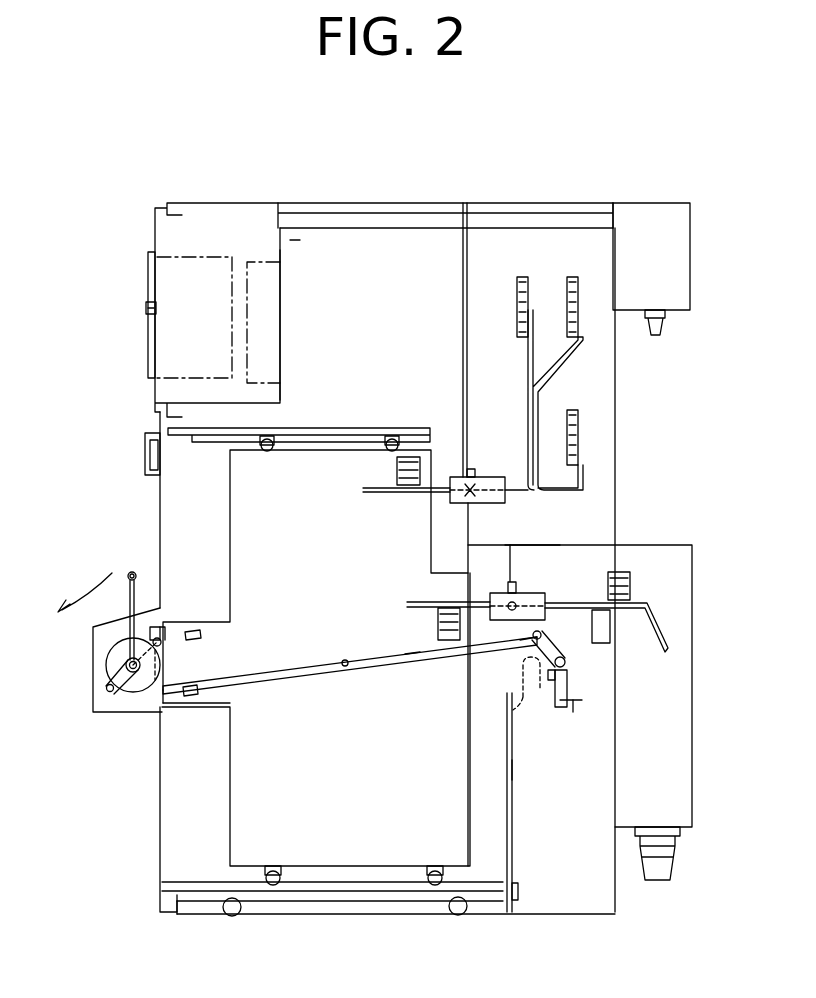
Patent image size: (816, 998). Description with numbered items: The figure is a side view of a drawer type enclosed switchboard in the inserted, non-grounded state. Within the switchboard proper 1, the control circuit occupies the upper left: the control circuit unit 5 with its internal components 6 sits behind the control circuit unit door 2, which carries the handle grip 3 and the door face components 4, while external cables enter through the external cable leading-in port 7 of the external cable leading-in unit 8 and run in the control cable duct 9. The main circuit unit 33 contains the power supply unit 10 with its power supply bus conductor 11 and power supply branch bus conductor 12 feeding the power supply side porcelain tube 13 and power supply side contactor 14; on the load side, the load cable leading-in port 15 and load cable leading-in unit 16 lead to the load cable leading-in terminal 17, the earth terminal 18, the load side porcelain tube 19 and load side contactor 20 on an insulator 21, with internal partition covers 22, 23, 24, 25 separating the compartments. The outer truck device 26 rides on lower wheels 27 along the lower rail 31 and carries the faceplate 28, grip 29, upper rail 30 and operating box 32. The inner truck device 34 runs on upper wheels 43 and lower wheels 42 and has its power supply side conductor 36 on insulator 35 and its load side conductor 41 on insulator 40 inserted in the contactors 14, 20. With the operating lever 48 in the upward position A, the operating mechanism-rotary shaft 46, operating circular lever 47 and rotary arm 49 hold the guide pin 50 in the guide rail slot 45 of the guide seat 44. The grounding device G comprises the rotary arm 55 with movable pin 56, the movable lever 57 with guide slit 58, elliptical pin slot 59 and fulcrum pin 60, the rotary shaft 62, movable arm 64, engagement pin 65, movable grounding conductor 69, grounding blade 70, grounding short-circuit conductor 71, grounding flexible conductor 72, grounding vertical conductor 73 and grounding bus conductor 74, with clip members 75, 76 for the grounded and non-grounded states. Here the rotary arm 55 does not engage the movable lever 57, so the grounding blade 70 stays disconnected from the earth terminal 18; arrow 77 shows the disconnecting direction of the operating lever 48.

The switchboard proper 1 is at (263, 203).
The control circuit unit door 2 is at (155, 230).
The handle grip for the control circuit unit door 3 is at (146, 310).
The components mounted on a door face 4 is at (148, 270).
The control circuit unit 5 is at (207, 250).
The internal components of the control circuit 6 is at (257, 260).
The external cable leading-in port of the control circuit 7 is at (655, 336).
The external cable leading-in unit of the control circuit 8 is at (652, 205).
The control cable duct 9 is at (407, 203).
The power supply unit of the main circuit 10 is at (598, 433).
The power supply bus conductor of the main circuit 11 is at (520, 275).
The power supply branch bus conductor of the main circuit 12 is at (528, 437).
The power supply side porcelain tube of the main circuit 13 is at (485, 505).
The power supply side contactor of the main circuit 14 is at (471, 477).
The load cable leading-in port of the main circuit 15 is at (657, 881).
The load cable leading-in unit of the main circuit 16 is at (655, 555).
The load cable leading-in terminal of the main circuit 17 is at (660, 635).
The earth terminal 18 is at (612, 632).
The load side porcelain tube of the main circuit 19 is at (530, 593).
The load side contactor of the main circuit 20 is at (508, 588).
The insulator 21 is at (608, 583).
The internal partition cover 22 is at (282, 305).
The internal partition cover 23 is at (462, 320).
The internal partition cover 24 is at (570, 545).
The internal partition cover 25 is at (507, 790).
The outer truck device proper 26 is at (206, 915).
The lower wheel of the outer truck 27 is at (232, 917).
The faceplate 28 is at (160, 840).
The grip 29 is at (145, 455).
The upper rail of the outer truck 30 is at (350, 427).
The lower rail of the outer truck 31 is at (192, 900).
The operating box 32 is at (93, 660).
The main circuit unit 33 is at (348, 250).
The inner truck device proper 34 is at (230, 798).
The power supply side insulator of the inner truck device 35 is at (397, 472).
The power supply side conductor of the inner truck device 36 is at (385, 493).
The load side insulator of the inner truck device 40 is at (438, 622).
The load side conductor of the inner truck device 41 is at (420, 600).
The lower wheel of the inner truck 42 is at (274, 886).
The upper wheel of the inner truck 43 is at (395, 435).
The guide seat 44 is at (215, 708).
The guide rail slot 45 is at (159, 630).
The operating mechanism-rotary shaft 46 is at (133, 673).
The operating circular lever 47 is at (108, 672).
The operating lever 48 is at (132, 571).
The rotary arm for operating the inner truck 49 is at (161, 645).
The guide pin for operating the inner truck 50 is at (164, 632).
The rotary arm for the grounding device 55 is at (112, 695).
The movable pin for the grounding device 56 is at (108, 690).
The movable lever for the grounding device 57 is at (300, 665).
The guide slit 58 is at (165, 700).
The elliptical pin slot 59 is at (521, 648).
The fulcrum pin of the movable lever 60 is at (345, 667).
The rotary shaft for the grounding device 62 is at (570, 672).
The movable arm for the grounding device 64 is at (565, 650).
The pin for the engagement between the movable lever and the movable arm 65 is at (541, 637).
The movable grounding conductor 69 is at (580, 700).
The grounding blade 70 is at (573, 712).
The grounding short-circuit conductor 71 is at (550, 682).
The grounding flexible conductor 72 is at (528, 682).
The grounding vertical conductor 73 is at (514, 770).
The grounding bus conductor 74 is at (519, 890).
The clip member for the grounded state of the movable lever 75 is at (201, 636).
The clip member for the non-grounded state of the movable lever 76 is at (198, 691).
The direction of a disconnecting operation for the operating lever 77 is at (93, 587).
The upward position of the operating lever A is at (144, 574).
The grounding device G is at (415, 657).